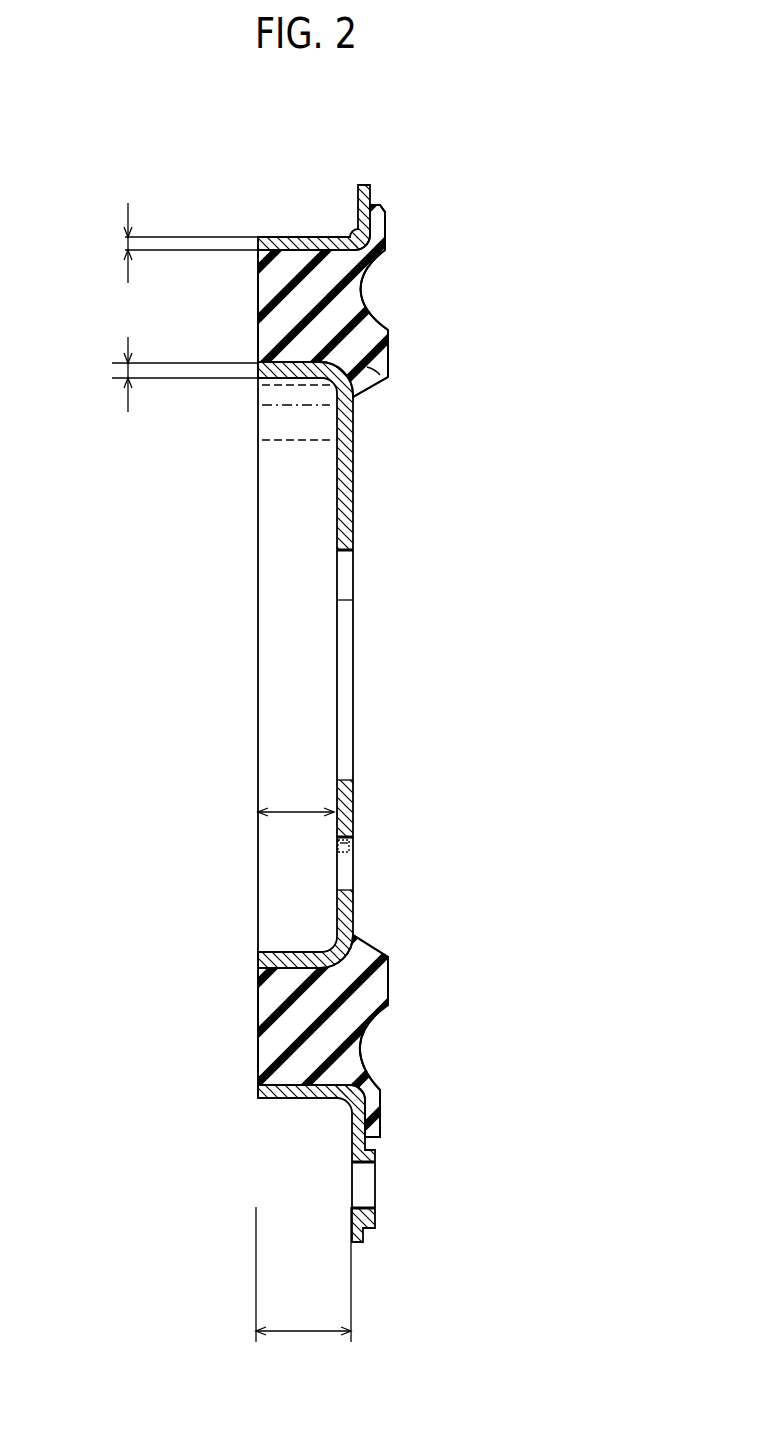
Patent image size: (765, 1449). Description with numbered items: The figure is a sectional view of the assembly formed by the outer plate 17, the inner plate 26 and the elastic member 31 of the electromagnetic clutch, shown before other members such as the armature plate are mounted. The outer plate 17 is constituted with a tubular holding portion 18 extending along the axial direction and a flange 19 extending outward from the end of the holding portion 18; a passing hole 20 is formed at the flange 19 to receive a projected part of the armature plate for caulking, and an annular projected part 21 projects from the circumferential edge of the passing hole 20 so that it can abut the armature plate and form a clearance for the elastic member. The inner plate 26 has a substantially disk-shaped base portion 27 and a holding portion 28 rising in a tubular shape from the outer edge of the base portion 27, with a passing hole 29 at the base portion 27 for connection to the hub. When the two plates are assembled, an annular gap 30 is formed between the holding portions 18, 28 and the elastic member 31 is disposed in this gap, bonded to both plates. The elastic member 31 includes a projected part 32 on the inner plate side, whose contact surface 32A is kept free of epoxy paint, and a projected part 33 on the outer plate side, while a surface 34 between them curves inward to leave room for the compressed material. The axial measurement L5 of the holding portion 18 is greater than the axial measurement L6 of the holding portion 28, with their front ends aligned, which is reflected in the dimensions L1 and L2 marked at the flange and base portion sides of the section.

The outer plate 17 is at (313, 687).
The holding portion 18 is at (277, 237).
The flange 19 is at (357, 218).
The passing hole 20 is at (353, 1180).
The annular projected part 21 is at (370, 1227).
The inner plate 26 is at (314, 665).
The base portion 27 is at (355, 490).
The holding portion 28 is at (300, 380).
The passing hole 29 is at (335, 853).
The annular gap 30 is at (325, 671).
The elastic member 31 is at (282, 322).
The projected part 32 is at (388, 378).
The surface 32A is at (388, 347).
The projected part 33 is at (385, 232).
The surface 34 is at (355, 287).
The dimension L1 is at (165, 243).
The dimension L2 is at (162, 374).
The measurement L5 is at (303, 1274).
The measurement L6 is at (297, 812).